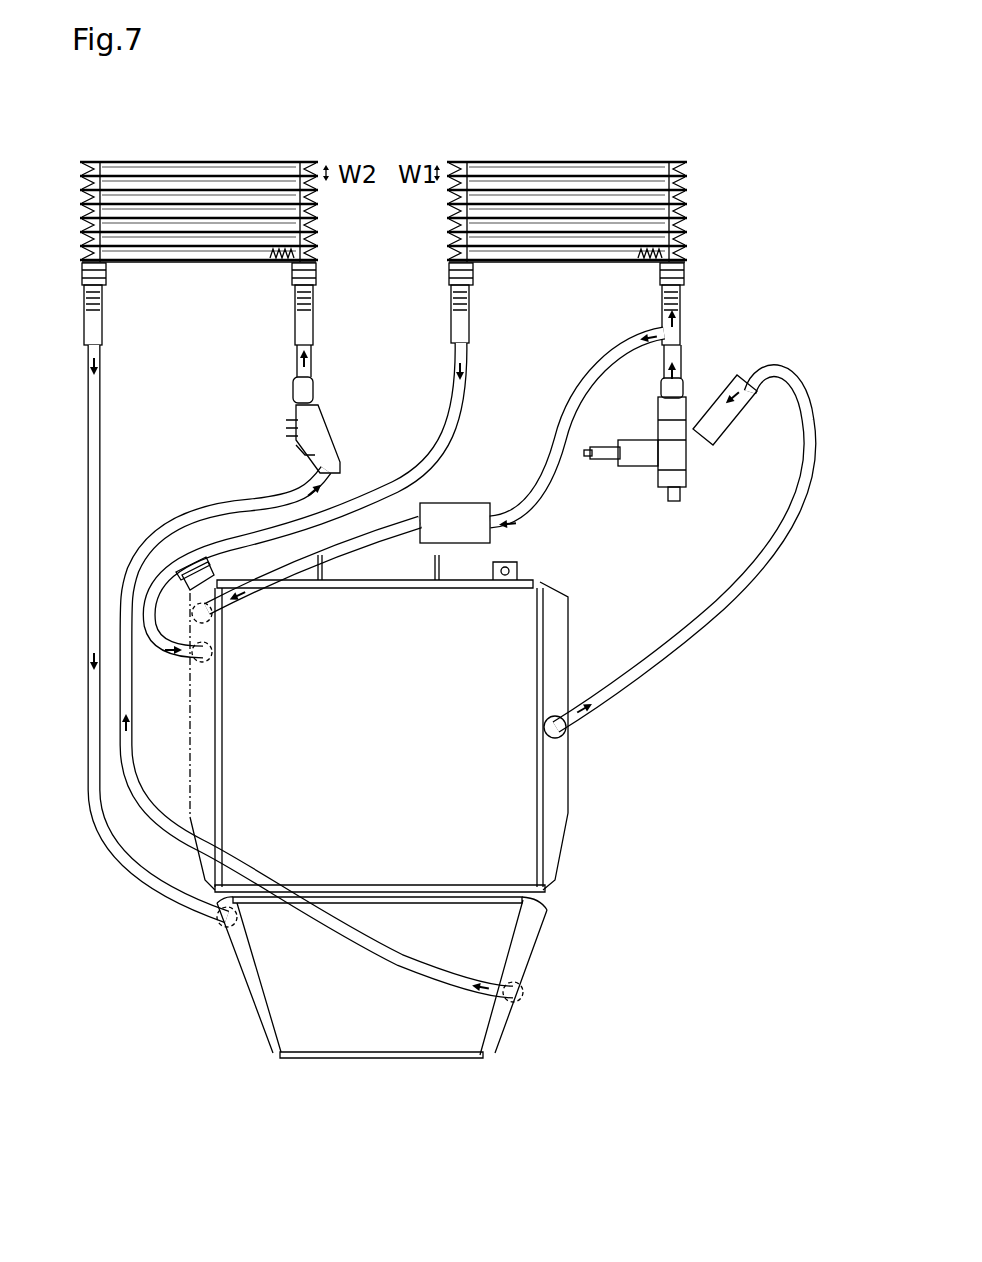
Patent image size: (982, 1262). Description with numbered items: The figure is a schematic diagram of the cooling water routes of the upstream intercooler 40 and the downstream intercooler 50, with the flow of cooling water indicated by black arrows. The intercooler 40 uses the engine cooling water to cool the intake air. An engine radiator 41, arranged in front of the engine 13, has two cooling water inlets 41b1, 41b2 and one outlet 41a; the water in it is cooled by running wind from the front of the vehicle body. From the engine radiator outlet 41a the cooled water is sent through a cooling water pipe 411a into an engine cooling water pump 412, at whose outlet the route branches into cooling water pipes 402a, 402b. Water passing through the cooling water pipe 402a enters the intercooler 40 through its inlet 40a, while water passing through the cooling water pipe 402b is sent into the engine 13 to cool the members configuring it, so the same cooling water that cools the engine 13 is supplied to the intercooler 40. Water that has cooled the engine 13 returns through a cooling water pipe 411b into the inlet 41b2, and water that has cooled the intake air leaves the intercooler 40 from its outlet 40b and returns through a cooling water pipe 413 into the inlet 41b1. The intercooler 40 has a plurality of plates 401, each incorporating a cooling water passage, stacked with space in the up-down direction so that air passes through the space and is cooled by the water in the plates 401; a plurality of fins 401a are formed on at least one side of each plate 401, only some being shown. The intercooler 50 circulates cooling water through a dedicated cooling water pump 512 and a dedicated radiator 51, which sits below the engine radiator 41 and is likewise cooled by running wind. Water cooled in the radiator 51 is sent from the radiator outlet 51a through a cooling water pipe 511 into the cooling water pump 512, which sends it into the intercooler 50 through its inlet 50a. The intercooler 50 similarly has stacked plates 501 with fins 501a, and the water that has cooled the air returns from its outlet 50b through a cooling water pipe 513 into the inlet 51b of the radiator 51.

The downstream intercooler 50 is at (234, 260).
The plate 501 is at (167, 160).
The fin 501a is at (273, 262).
The inlet 50a is at (305, 312).
The outlet 50b is at (102, 322).
The upstream intercooler 40 is at (589, 258).
The plate 401 is at (573, 160).
The fin 401a is at (648, 258).
The inlet 40a is at (683, 298).
The outlet 40b is at (453, 296).
The cooling water pipe 402a is at (684, 302).
The cooling water pipe 402b is at (570, 425).
The cooling water pipe 413 is at (438, 453).
The engine cooling water pump 412 is at (693, 462).
The cooling water pipe 411a is at (787, 562).
The cooling water pipe 411b is at (337, 548).
The engine 13 is at (457, 532).
The engine radiator 41 is at (442, 723).
The engine radiator outlet 41a is at (573, 740).
The inlet 41b1 is at (210, 660).
The inlet 41b2 is at (210, 623).
The radiator 51 is at (399, 985).
The radiator outlet 51a is at (520, 996).
The inlet 51b is at (218, 925).
The cooling water pipe 511 is at (378, 950).
The cooling water pump 512 is at (320, 424).
The cooling water pipe 513 is at (92, 700).